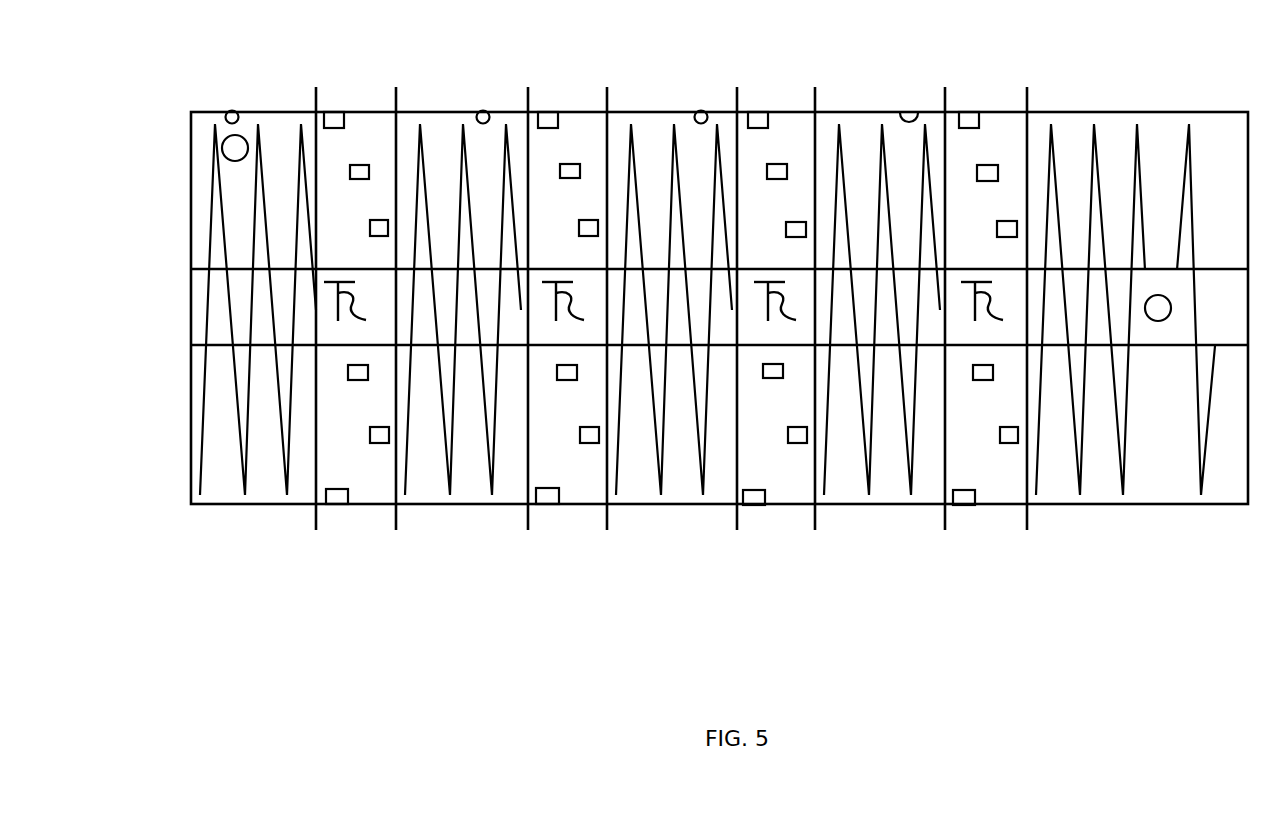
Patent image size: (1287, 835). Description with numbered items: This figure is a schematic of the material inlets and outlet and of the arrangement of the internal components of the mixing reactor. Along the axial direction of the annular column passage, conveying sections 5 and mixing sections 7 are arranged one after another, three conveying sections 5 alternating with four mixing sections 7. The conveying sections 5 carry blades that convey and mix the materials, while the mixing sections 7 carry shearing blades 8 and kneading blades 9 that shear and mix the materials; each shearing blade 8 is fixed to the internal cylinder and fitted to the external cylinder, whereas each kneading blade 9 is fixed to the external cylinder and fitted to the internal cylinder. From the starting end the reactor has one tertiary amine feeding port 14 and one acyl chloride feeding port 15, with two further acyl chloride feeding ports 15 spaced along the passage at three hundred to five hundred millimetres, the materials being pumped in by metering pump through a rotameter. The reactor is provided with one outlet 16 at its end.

The conveying section 5 is at (262, 493).
The mixing section 7 is at (366, 498).
The shearing blade 8 is at (670, 314).
The kneading blade 9 is at (335, 112).
The tertiary amine feeding port 14 is at (230, 149).
The acyl chloride feeding port 15 is at (232, 111).
The outlet 16 is at (1157, 314).